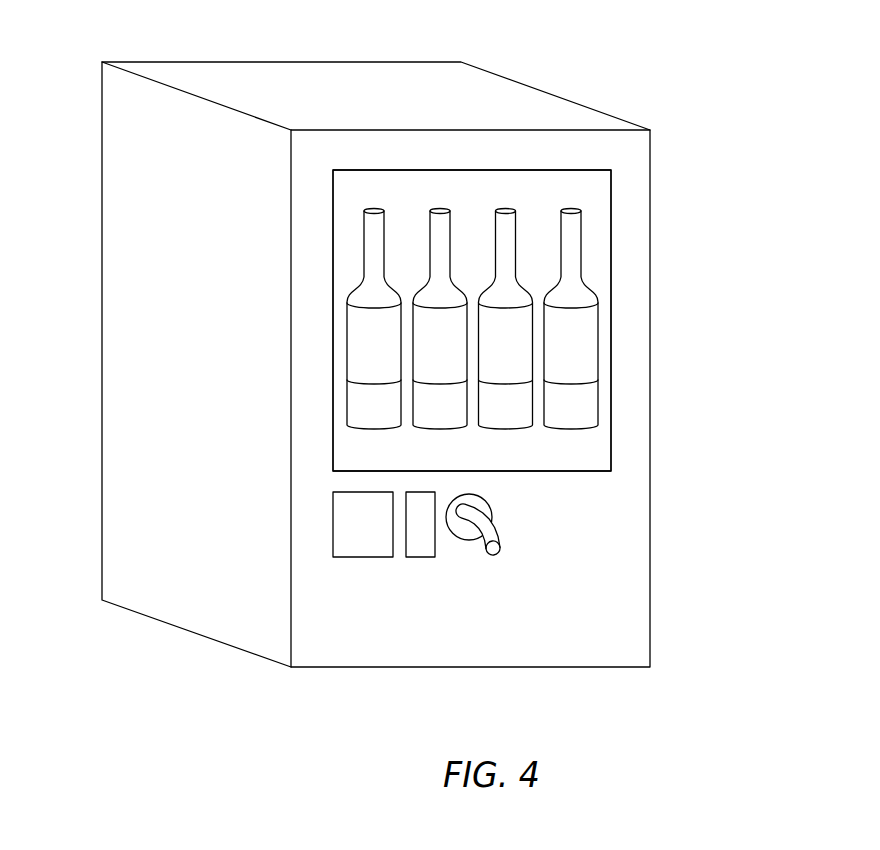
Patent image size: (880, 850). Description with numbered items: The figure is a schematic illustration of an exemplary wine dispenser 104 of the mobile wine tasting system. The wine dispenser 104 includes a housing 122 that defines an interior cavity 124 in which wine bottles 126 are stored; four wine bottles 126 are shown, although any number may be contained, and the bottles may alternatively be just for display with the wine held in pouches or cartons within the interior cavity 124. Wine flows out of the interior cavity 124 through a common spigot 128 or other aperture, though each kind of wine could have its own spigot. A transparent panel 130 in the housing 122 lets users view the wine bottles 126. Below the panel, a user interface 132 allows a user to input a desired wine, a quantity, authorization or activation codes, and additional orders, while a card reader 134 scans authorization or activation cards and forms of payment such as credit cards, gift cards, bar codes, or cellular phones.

The wine dispenser 104 is at (579, 52).
The housing 122 is at (196, 75).
The interior cavity 124 is at (350, 449).
The wine bottles 126 is at (581, 243).
The spigot 128 is at (500, 535).
The transparent panel 130 is at (611, 187).
The user interface 132 is at (366, 557).
The card reader 134 is at (423, 557).